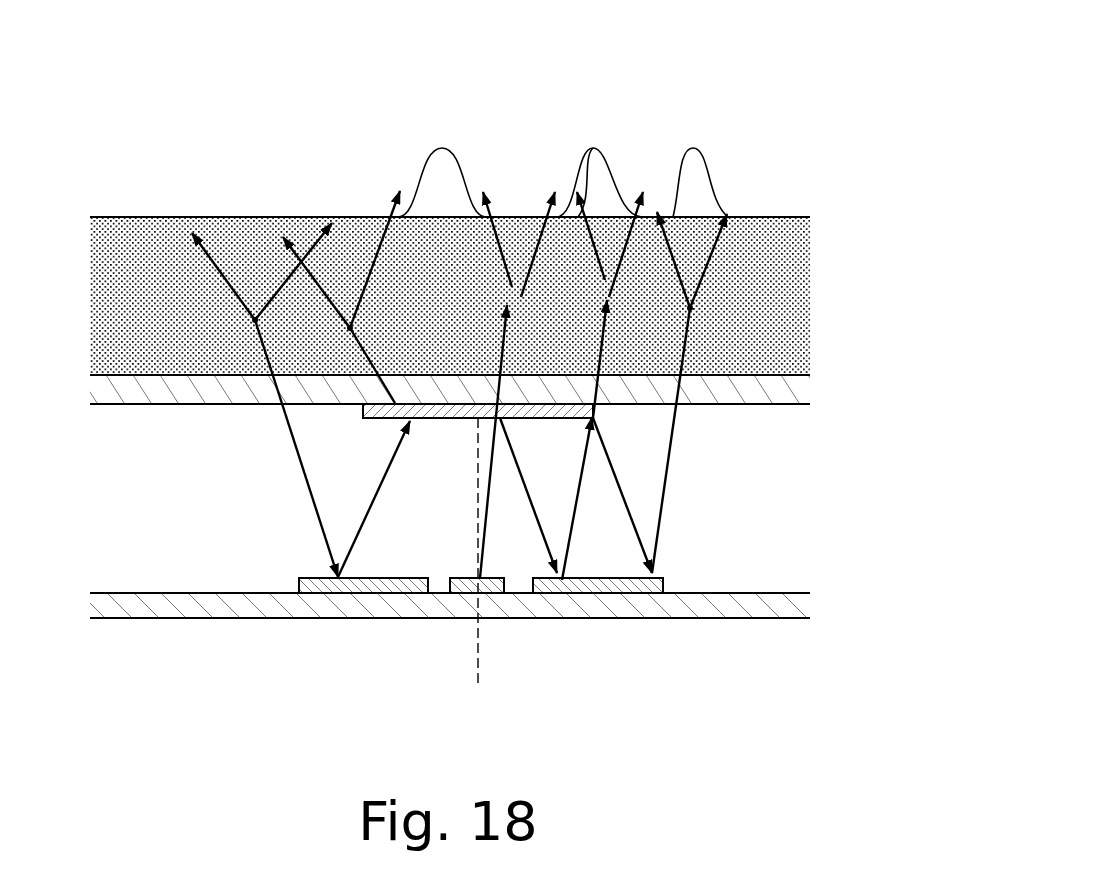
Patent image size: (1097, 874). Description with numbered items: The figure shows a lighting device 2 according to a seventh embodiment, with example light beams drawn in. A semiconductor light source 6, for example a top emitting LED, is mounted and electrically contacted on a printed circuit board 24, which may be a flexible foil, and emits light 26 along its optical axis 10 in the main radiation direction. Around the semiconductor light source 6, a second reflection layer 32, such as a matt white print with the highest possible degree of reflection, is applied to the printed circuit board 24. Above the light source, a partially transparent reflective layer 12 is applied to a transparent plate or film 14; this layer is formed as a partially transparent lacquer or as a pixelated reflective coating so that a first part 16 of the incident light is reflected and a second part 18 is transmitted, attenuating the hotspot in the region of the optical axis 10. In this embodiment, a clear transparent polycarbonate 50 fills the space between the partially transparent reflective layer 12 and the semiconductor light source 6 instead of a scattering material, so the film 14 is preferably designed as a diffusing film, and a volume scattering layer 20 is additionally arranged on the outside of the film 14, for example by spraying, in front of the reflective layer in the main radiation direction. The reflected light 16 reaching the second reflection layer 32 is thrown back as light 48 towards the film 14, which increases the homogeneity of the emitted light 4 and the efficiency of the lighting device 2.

The lighting device 2 is at (706, 98).
The emitted light 4 is at (563, 168).
The semiconductor light source 6 is at (453, 577).
The optical axis 10 is at (478, 675).
The partially transparent reflective layer 12 is at (543, 418).
The transparent plate or film 14 is at (790, 397).
The reflected part of the light 16 is at (373, 502).
The transmitted part of the light 18 is at (364, 348).
The volume scattering material 20 is at (737, 333).
The printed circuit board 24 is at (755, 607).
The light emitted by the semiconductor light source 26 is at (478, 577).
The second reflection layer 32 is at (342, 588).
The reflected-back light 48 is at (303, 470).
The clear transparent polycarbonate 50 is at (137, 513).